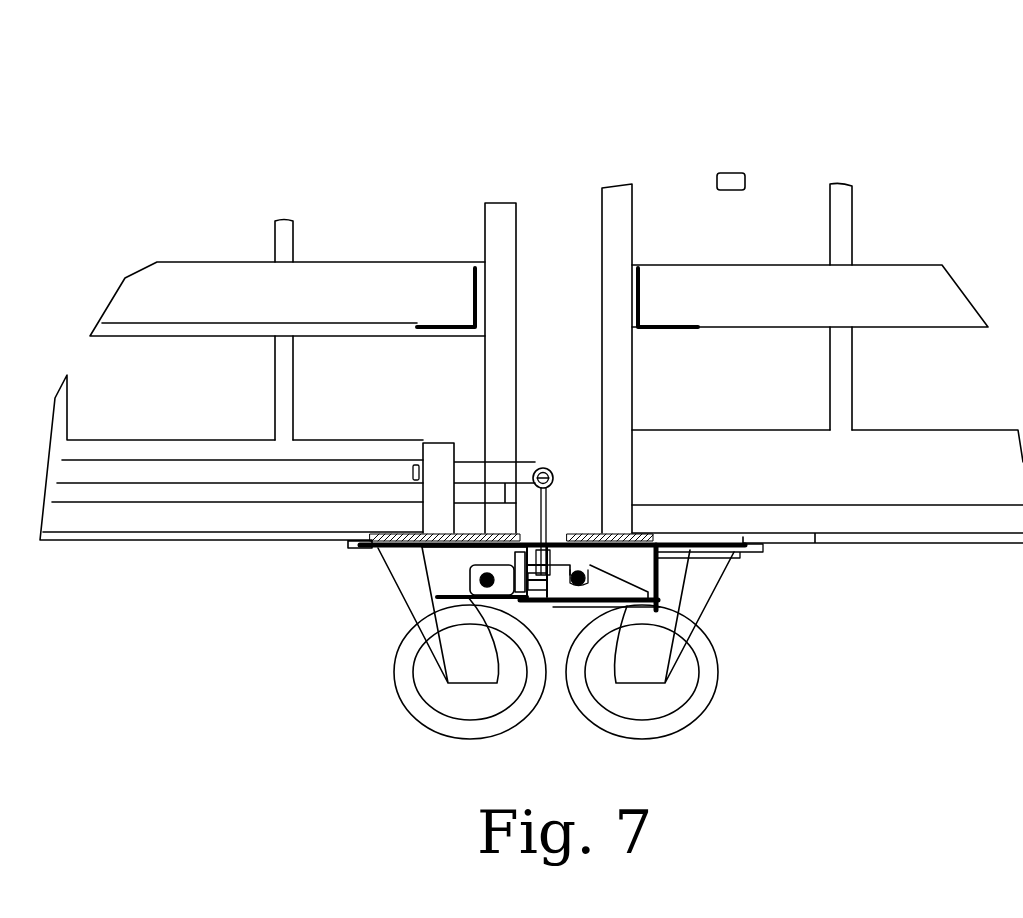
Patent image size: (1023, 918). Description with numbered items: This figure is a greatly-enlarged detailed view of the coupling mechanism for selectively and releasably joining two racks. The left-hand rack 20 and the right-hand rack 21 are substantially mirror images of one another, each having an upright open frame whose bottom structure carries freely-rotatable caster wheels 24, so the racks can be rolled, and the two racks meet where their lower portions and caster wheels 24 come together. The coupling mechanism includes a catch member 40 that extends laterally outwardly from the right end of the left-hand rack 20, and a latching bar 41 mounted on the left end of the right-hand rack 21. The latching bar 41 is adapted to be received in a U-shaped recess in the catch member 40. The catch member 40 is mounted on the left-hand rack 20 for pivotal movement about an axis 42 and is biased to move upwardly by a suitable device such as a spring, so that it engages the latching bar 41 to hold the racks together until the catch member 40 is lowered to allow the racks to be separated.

The left-hand rack 20 is at (284, 196).
The right-hand rack 21 is at (842, 174).
The caster wheel 24 is at (417, 722).
The catch member 40 is at (628, 607).
The latching bar 41 is at (584, 567).
The axis 42 is at (482, 588).